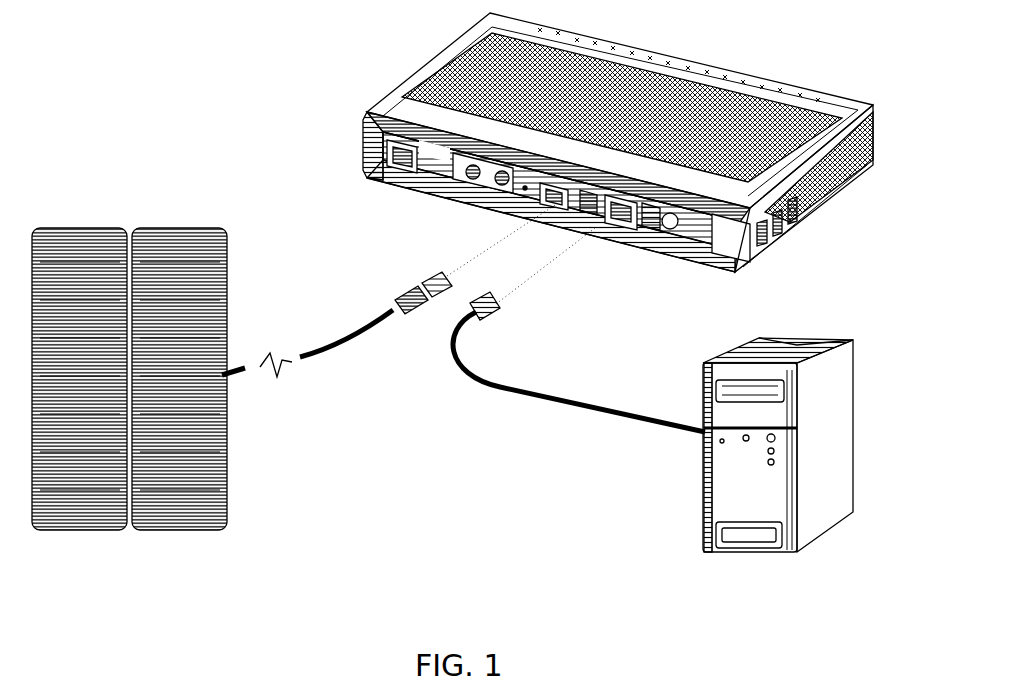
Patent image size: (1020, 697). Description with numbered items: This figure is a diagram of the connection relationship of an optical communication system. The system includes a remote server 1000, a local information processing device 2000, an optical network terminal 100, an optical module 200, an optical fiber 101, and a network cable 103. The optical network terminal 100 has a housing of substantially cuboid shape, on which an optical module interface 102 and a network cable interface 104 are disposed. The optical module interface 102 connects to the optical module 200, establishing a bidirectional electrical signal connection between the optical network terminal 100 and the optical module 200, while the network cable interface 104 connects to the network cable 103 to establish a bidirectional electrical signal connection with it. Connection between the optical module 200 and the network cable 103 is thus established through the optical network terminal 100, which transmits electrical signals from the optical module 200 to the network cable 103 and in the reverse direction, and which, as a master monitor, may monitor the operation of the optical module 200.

The optical network terminal 100 is at (437, 50).
The optical fiber 101 is at (343, 350).
The optical module interface 102 is at (557, 197).
The network cable 103 is at (498, 386).
The network cable interface 104 is at (620, 212).
The optical module 200 is at (425, 283).
The remote server 1000 is at (200, 228).
The local information processing device 2000 is at (710, 478).